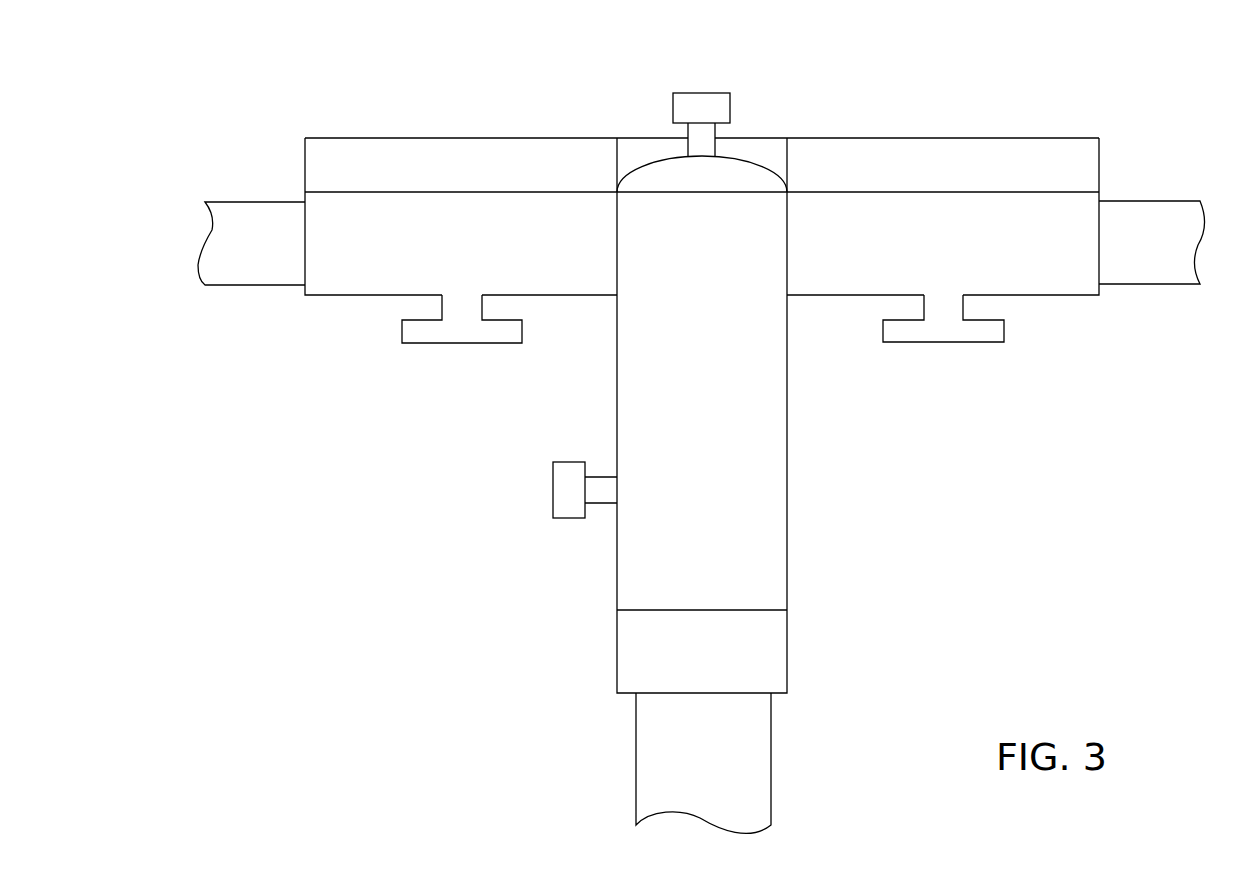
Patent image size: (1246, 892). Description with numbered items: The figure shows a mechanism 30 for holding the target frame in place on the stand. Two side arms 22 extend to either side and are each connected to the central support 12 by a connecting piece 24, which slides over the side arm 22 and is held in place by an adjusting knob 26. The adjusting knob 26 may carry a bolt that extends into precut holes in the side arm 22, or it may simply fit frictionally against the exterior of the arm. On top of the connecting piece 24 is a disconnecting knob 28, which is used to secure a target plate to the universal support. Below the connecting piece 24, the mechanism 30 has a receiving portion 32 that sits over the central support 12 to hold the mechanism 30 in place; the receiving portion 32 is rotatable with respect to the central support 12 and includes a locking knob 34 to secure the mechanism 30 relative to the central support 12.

The central support 12 is at (636, 793).
The side arm 22 is at (252, 200).
The connecting piece 24 is at (1072, 295).
The adjusting knob 26 is at (462, 343).
The disconnecting knob 28 is at (673, 108).
The mechanism 30 is at (406, 66).
The receiving portion 32 is at (788, 466).
The locking knob 34 is at (553, 490).